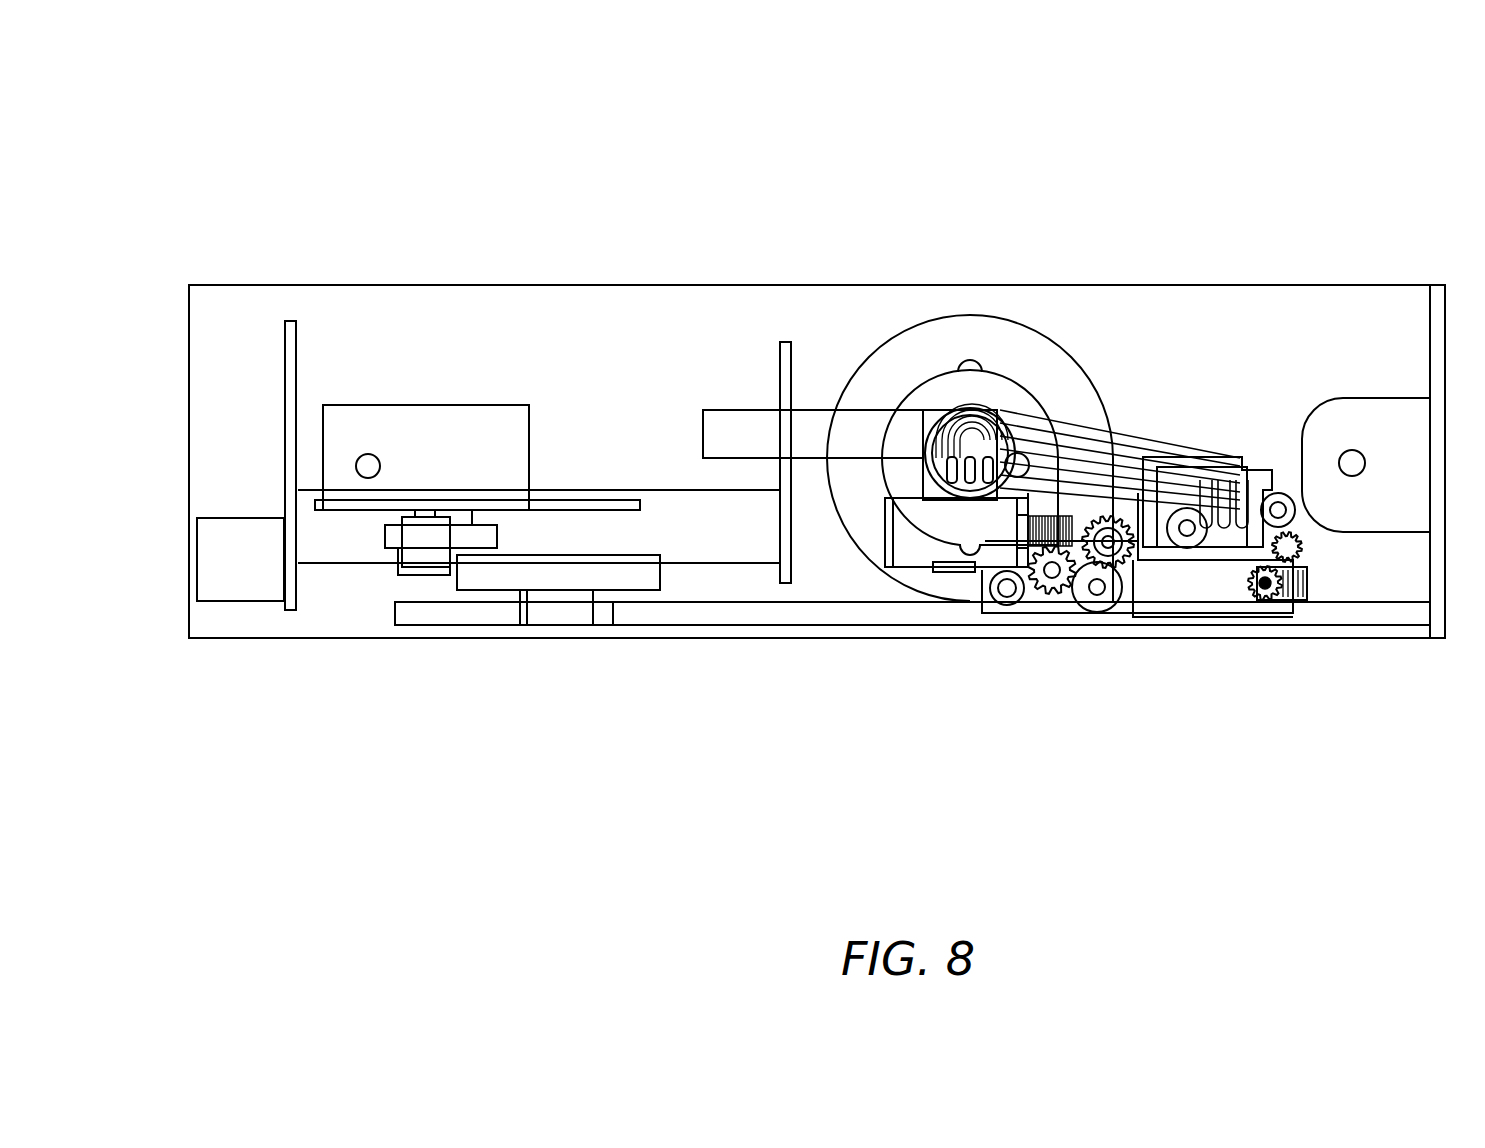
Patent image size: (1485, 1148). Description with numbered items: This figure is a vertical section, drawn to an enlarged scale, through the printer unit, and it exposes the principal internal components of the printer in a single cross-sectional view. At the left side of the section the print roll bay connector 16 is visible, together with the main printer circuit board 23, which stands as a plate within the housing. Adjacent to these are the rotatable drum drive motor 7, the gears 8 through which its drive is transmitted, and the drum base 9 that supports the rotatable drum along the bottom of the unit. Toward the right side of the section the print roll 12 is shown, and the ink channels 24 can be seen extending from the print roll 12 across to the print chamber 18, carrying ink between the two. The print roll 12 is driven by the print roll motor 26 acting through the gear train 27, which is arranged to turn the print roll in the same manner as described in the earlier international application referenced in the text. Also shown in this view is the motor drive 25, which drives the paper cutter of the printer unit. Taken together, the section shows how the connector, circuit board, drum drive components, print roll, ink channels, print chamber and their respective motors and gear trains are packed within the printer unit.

The rotatable drum drive motor 7 is at (446, 428).
The gears 8 is at (467, 533).
The drum base 9 is at (698, 612).
The print roll 12 is at (997, 337).
The print roll bay connector 16 is at (232, 572).
The print chamber 18 is at (1205, 527).
The main printer circuit board 23 is at (296, 352).
The ink channels 24 is at (1128, 452).
The motor drive 25 is at (1220, 587).
The print roll motor 26 is at (908, 545).
The gear train 27 is at (1052, 590).